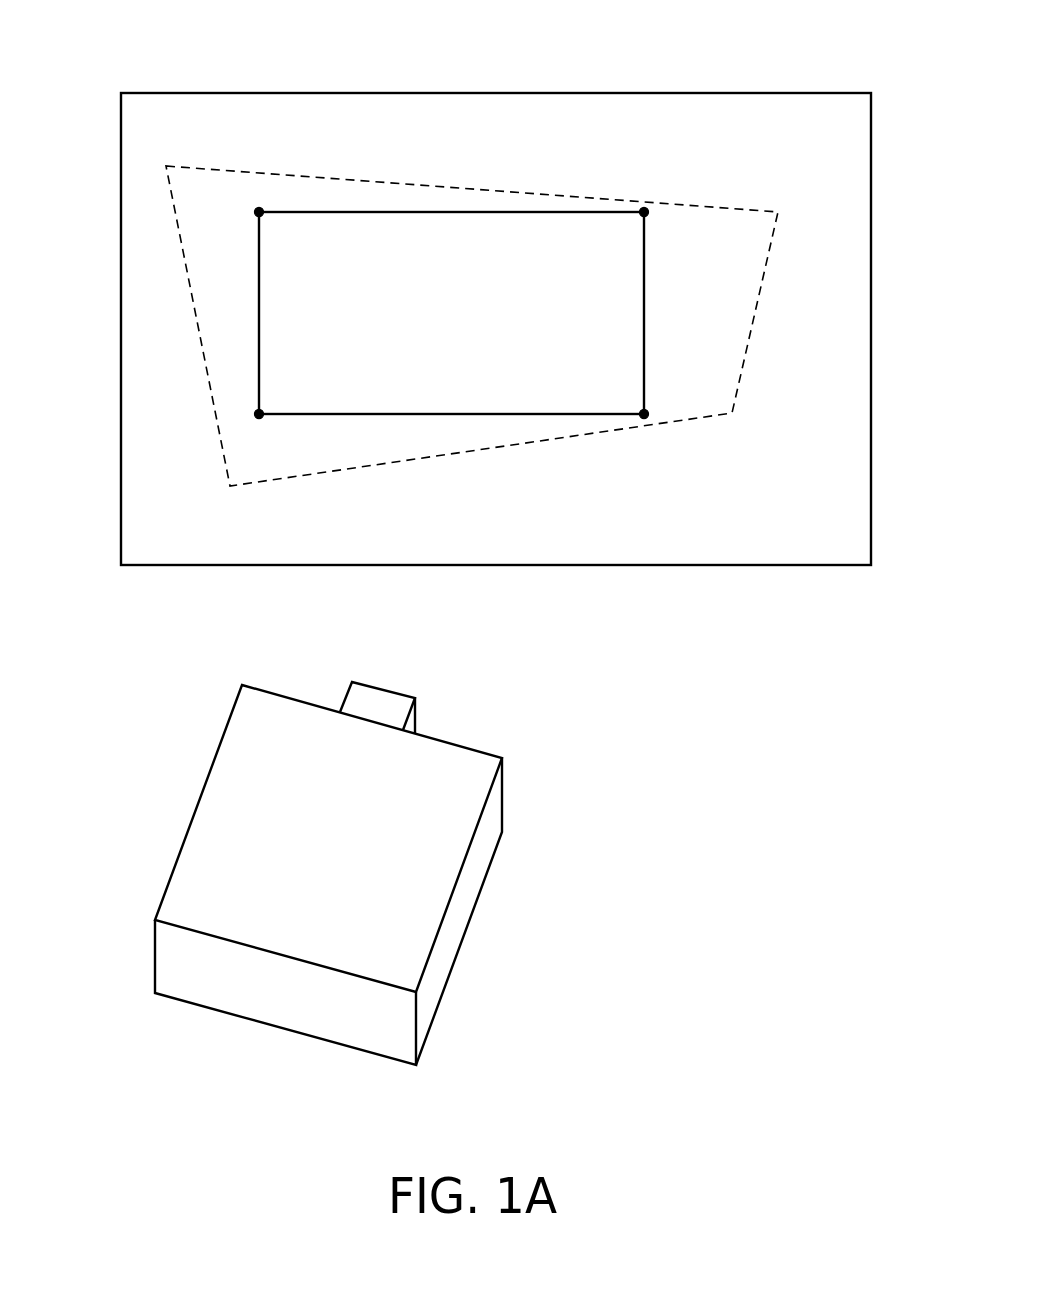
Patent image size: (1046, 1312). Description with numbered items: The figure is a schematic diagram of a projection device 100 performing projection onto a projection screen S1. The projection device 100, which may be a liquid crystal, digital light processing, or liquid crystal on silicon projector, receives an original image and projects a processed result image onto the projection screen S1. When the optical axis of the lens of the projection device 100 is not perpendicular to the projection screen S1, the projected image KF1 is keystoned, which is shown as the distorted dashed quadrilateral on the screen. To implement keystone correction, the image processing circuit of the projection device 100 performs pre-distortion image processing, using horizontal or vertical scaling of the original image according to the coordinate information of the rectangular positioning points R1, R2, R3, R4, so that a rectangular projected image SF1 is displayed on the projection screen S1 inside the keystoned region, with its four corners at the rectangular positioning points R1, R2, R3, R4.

The projection screen S1 is at (800, 163).
The projected image KF1 is at (242, 171).
The rectangular projected image SF1 is at (358, 212).
The rectangular positioning point R1 is at (259, 212).
The rectangular positioning point R2 is at (644, 212).
The rectangular positioning point R3 is at (644, 414).
The rectangular positioning point R4 is at (259, 414).
The projection device 100 is at (198, 801).